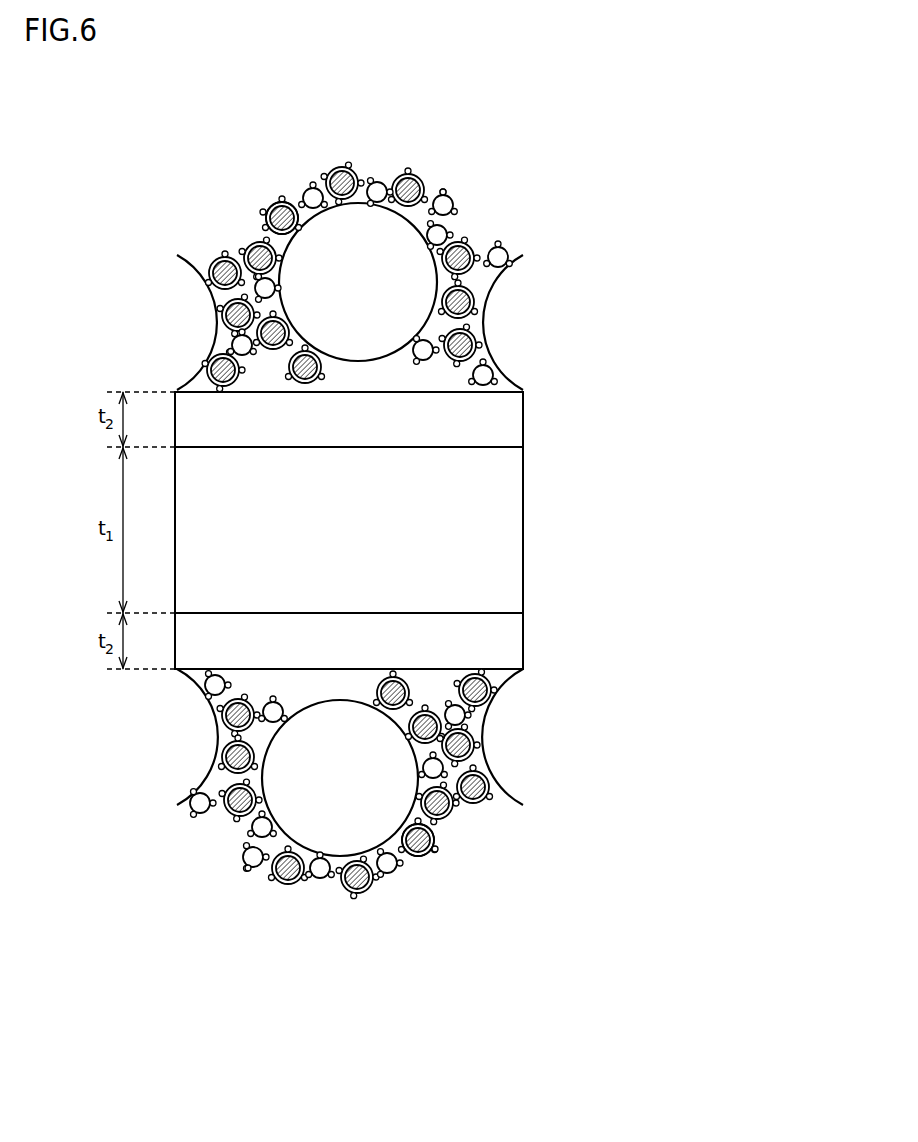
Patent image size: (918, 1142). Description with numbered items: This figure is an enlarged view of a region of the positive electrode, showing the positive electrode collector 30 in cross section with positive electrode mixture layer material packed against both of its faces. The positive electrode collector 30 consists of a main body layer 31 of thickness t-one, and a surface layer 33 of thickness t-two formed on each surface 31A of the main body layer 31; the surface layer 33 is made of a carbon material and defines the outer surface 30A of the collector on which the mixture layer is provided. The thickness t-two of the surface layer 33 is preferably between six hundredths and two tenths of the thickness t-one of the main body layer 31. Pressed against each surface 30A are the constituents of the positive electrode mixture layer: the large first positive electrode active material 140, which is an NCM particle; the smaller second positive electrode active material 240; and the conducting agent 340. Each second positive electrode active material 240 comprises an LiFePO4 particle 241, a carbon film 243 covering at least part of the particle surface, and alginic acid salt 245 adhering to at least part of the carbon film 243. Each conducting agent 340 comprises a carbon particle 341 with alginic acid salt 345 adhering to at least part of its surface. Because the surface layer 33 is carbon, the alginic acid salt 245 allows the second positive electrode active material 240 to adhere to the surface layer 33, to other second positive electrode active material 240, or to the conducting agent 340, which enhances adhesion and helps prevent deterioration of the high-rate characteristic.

The positive electrode collector 30 is at (582, 408).
The main body layer 31 is at (520, 540).
The surface layer 33 is at (520, 428).
The surface of positive electrode collector 30A is at (465, 392).
The surface of main body layer 31A is at (203, 447).
The first positive electrode active material 140 is at (368, 223).
The second positive electrode active material 240 is at (332, 66).
The LiFePO4 particle 241 is at (277, 204).
The carbon film 243 is at (287, 203).
The alginic acid salt 245 is at (260, 211).
The conducting agent 340 is at (483, 66).
The carbon particle 341 is at (447, 198).
The alginic acid salt 345 is at (440, 196).